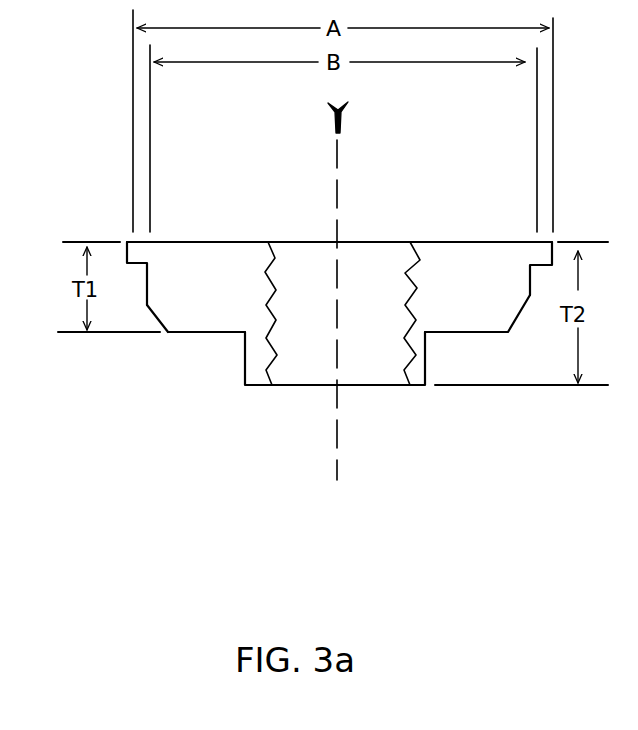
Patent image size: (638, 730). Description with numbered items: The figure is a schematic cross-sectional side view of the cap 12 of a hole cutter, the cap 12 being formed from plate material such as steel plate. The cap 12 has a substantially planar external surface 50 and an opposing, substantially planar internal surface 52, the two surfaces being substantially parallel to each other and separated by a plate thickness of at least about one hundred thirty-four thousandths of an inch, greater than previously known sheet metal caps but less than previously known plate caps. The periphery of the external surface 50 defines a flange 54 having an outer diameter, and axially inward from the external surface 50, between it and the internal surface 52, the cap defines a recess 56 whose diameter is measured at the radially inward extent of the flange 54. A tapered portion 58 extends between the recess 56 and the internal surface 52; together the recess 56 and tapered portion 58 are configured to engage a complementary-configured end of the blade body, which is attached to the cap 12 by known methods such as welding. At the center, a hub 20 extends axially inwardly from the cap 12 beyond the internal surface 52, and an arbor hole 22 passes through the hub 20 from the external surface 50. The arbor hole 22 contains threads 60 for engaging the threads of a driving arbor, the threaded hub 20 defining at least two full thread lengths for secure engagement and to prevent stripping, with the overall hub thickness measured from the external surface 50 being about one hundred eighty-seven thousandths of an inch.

The cap 12 is at (183, 342).
The hub 20 is at (240, 373).
The arbor hole 22 is at (283, 375).
The external surface 50 is at (178, 242).
The internal surface 52 is at (213, 334).
The flange 54 is at (125, 241).
The recess 56 is at (537, 283).
The tapered portion 58 is at (518, 328).
The threads 60 is at (411, 283).